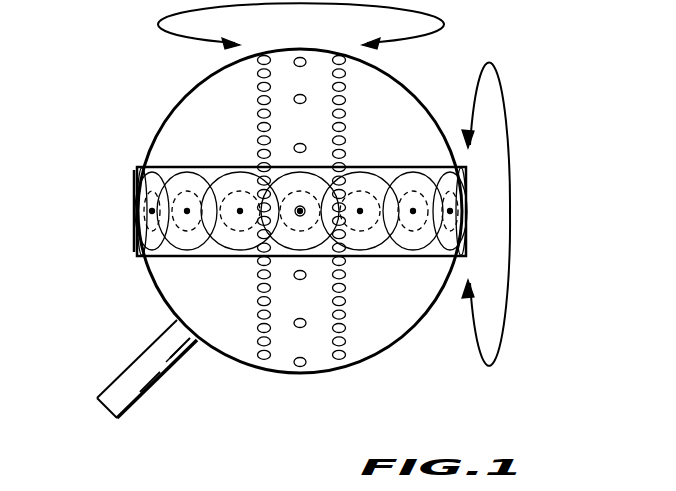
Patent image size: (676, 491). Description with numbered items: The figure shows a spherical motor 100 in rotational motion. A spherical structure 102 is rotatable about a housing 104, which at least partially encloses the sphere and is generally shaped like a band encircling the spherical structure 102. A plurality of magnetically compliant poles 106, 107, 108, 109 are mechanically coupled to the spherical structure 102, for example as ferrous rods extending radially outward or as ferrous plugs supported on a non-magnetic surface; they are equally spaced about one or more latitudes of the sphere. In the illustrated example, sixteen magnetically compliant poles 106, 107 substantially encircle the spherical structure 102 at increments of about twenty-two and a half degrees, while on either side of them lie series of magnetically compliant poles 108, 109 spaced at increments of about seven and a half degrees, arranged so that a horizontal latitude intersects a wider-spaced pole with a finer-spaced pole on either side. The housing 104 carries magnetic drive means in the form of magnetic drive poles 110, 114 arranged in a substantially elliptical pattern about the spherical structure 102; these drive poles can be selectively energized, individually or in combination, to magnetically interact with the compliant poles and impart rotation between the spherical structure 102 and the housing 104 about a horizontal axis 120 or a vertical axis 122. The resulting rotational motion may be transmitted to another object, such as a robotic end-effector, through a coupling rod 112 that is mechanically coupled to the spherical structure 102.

The spherical motor 100 is at (137, 96).
The spherical structure 102 is at (218, 345).
The housing 104 is at (170, 256).
The magnetically compliant pole 106 is at (302, 368).
The magnetically compliant pole 107 is at (298, 330).
The magnetically compliant pole 108 is at (345, 357).
The magnetically compliant pole 109 is at (343, 366).
The magnetic drive pole 110 is at (185, 205).
The coupling rod 112 is at (133, 363).
The magnetic drive pole 114 is at (299, 213).
The horizontal axis 120 is at (443, 24).
The vertical axis 122 is at (503, 108).